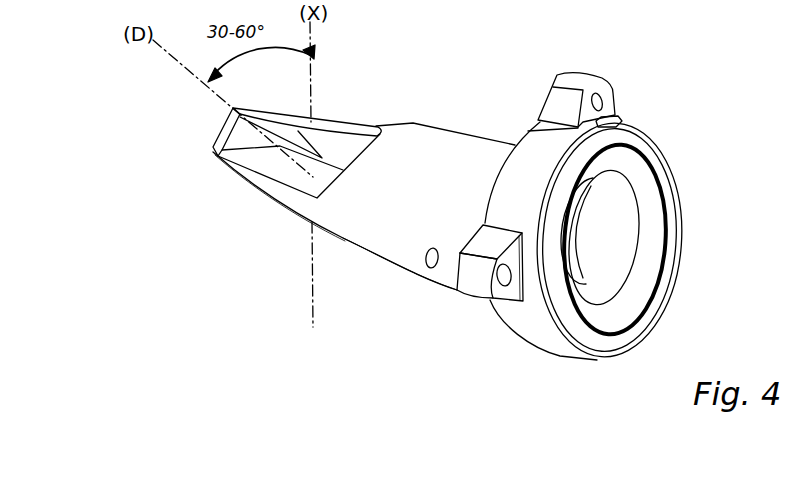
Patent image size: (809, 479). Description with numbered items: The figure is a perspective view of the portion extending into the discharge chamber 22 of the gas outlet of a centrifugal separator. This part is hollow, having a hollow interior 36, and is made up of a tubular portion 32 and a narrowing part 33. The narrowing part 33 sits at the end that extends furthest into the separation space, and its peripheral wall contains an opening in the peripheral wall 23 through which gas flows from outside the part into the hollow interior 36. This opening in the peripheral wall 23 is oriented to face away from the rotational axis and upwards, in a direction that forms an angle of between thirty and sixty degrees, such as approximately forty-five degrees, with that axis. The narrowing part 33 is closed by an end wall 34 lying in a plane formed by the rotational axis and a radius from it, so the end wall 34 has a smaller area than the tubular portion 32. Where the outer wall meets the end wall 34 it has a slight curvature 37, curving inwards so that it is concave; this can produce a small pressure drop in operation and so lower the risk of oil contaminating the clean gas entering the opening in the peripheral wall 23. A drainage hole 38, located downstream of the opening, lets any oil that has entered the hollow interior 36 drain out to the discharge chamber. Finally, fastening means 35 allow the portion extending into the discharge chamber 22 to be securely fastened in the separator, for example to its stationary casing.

The portion extending into the discharge chamber 22 is at (403, 92).
The opening in the peripheral wall 23 is at (252, 186).
The tubular portion 32 is at (481, 148).
The narrowing part 33 is at (385, 230).
The end wall 34 is at (210, 136).
The fastening means 35 is at (569, 80).
The hollow interior 36 is at (610, 240).
The curvature 37 is at (282, 179).
The drainage hole 38 is at (432, 265).